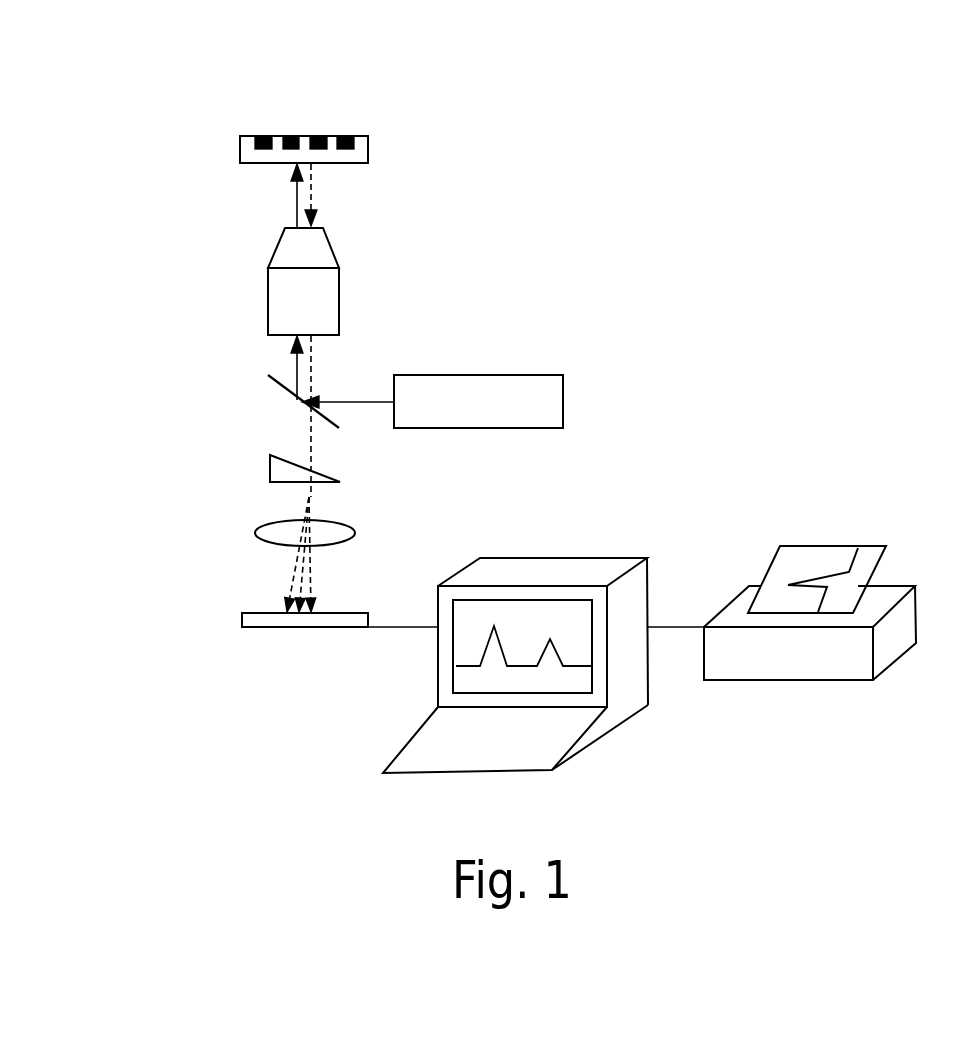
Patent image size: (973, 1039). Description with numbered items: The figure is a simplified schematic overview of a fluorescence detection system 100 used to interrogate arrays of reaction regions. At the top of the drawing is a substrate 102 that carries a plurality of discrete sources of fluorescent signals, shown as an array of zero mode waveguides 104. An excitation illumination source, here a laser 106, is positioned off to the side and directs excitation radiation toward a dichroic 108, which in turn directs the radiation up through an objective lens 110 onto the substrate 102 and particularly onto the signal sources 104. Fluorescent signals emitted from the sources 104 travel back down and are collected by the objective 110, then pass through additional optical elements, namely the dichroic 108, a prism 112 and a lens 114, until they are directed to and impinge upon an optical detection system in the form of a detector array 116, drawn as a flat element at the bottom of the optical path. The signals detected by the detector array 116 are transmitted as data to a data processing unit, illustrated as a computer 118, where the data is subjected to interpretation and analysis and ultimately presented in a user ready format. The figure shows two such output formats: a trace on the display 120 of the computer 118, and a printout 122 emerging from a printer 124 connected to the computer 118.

The system 100 is at (731, 122).
The substrate 102 is at (222, 140).
The zero mode waveguides 104 is at (250, 118).
The laser 106 is at (432, 401).
The dichroic 108 is at (265, 389).
The objective lens 110 is at (278, 296).
The prism 112 is at (253, 468).
The lens 114 is at (238, 533).
The detector array 116 is at (225, 613).
The computer 118 is at (589, 559).
The display 120 is at (450, 660).
The printout 122 is at (861, 533).
The printer 124 is at (896, 654).